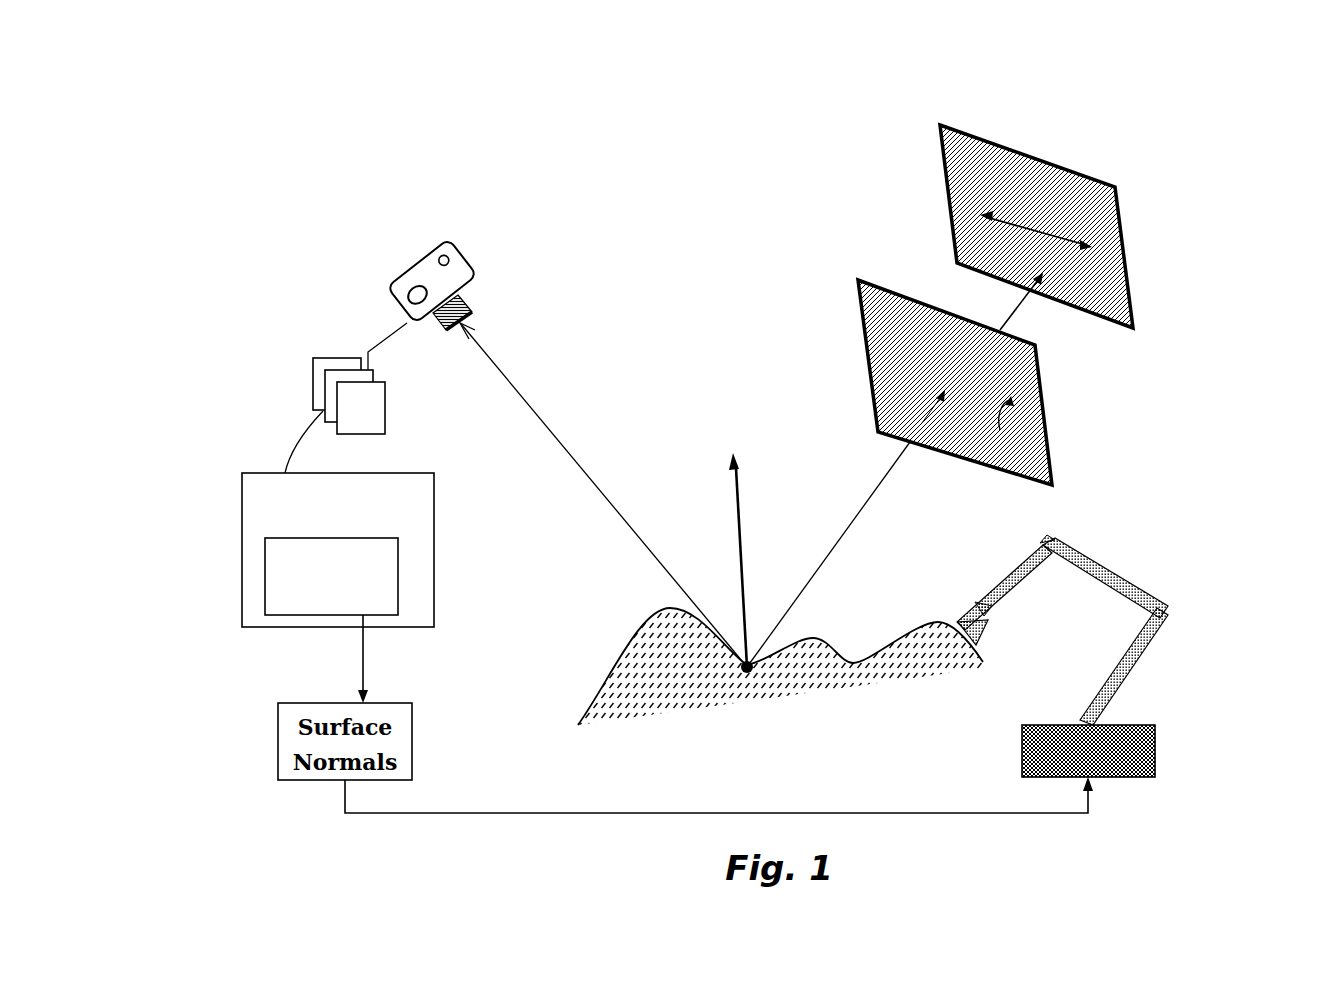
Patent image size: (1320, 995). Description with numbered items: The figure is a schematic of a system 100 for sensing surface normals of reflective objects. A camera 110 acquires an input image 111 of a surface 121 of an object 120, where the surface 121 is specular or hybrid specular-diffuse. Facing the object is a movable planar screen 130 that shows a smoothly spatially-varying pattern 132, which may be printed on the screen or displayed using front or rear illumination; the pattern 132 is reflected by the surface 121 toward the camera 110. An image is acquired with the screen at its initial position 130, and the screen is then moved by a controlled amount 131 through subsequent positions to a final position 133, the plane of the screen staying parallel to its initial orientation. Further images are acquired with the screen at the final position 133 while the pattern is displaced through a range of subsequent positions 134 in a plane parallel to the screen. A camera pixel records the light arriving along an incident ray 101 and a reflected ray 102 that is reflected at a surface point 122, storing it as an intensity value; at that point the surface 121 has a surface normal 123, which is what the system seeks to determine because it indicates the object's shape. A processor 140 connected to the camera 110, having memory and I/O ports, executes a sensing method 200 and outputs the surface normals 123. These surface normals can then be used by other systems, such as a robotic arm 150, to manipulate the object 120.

The system 100 is at (809, 938).
The incident ray 101 is at (840, 538).
The reflected ray 102 is at (553, 437).
The camera 110 is at (432, 246).
The input image 111 is at (313, 382).
The object 120 is at (781, 674).
The surface 121 is at (823, 637).
The surface point 122 is at (745, 673).
The surface normal 123 is at (280, 820).
The movable planar screen 130 is at (962, 359).
The controlled amount 131 is at (1027, 312).
The smoothly spatially-varying pattern 132 is at (1033, 423).
The final position 133 is at (1059, 203).
The range of subsequent positions 134 is at (1080, 173).
The processor 140 is at (385, 628).
The robotic arm 150 is at (1155, 737).
The sensing method 200 is at (338, 615).